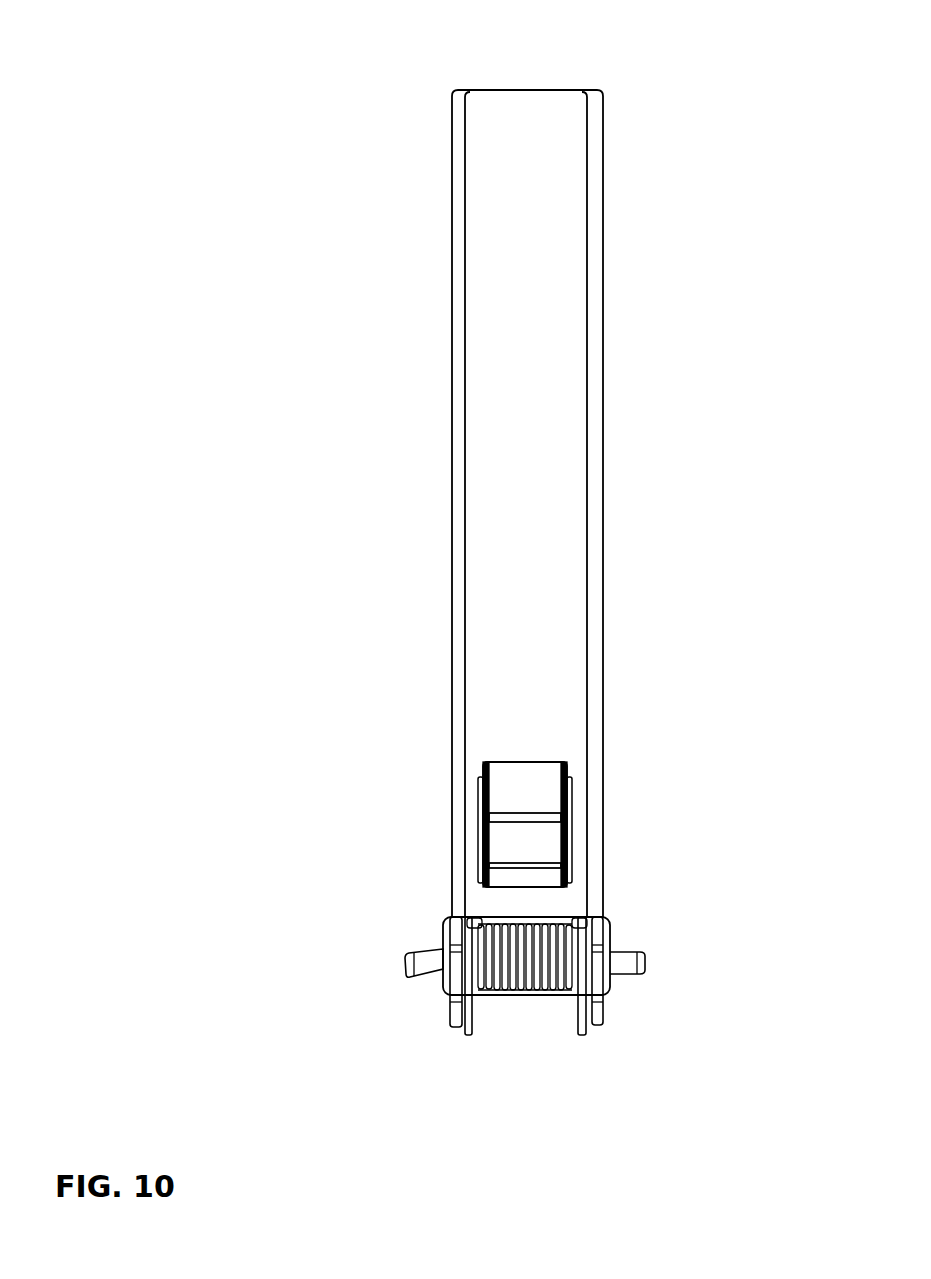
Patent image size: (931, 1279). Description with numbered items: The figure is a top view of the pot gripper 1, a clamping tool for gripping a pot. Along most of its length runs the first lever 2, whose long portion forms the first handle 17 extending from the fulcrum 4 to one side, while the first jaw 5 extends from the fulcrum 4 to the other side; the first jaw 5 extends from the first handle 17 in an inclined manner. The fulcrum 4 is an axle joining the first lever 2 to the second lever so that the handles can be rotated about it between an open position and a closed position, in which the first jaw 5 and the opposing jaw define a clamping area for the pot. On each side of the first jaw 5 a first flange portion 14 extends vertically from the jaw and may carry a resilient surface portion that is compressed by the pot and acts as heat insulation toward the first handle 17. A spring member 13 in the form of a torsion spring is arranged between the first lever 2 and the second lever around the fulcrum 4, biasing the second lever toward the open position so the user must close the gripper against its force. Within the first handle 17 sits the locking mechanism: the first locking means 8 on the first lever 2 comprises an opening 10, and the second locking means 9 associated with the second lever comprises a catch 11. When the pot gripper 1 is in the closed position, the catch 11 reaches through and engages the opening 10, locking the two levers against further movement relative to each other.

The pot gripper 1 is at (636, 469).
The first lever 2 is at (586, 503).
The first handle 17 is at (562, 565).
The catch 11 is at (537, 779).
The first locking means 8 is at (481, 839).
The second locking means 9 is at (529, 836).
The opening 10 is at (544, 875).
The fulcrum 4 is at (531, 977).
The first jaw 5 is at (605, 1009).
The spring member 13 is at (520, 990).
The first flange portion 14 is at (420, 955).